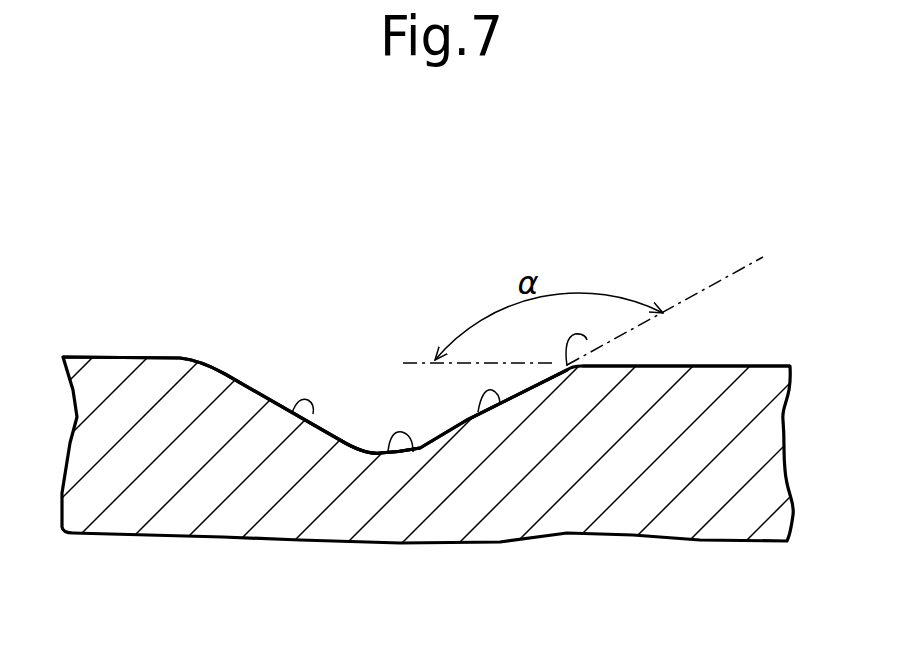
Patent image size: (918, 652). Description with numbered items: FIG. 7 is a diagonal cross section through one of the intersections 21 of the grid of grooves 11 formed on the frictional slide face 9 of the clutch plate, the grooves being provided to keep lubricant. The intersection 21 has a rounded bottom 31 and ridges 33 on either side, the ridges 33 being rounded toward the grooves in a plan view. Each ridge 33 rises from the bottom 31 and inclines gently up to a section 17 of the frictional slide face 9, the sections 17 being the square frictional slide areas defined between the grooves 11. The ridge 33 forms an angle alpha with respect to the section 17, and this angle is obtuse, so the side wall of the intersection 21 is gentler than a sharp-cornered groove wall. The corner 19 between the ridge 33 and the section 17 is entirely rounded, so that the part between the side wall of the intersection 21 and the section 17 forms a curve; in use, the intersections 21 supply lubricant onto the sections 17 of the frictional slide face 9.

The frictional slide face 9 is at (132, 357).
The grooves 11 is at (323, 370).
The section 17 is at (175, 358).
The corner 19 is at (217, 360).
The intersection 21 is at (378, 427).
The bottom 31 is at (413, 453).
The ridge 33 is at (302, 422).